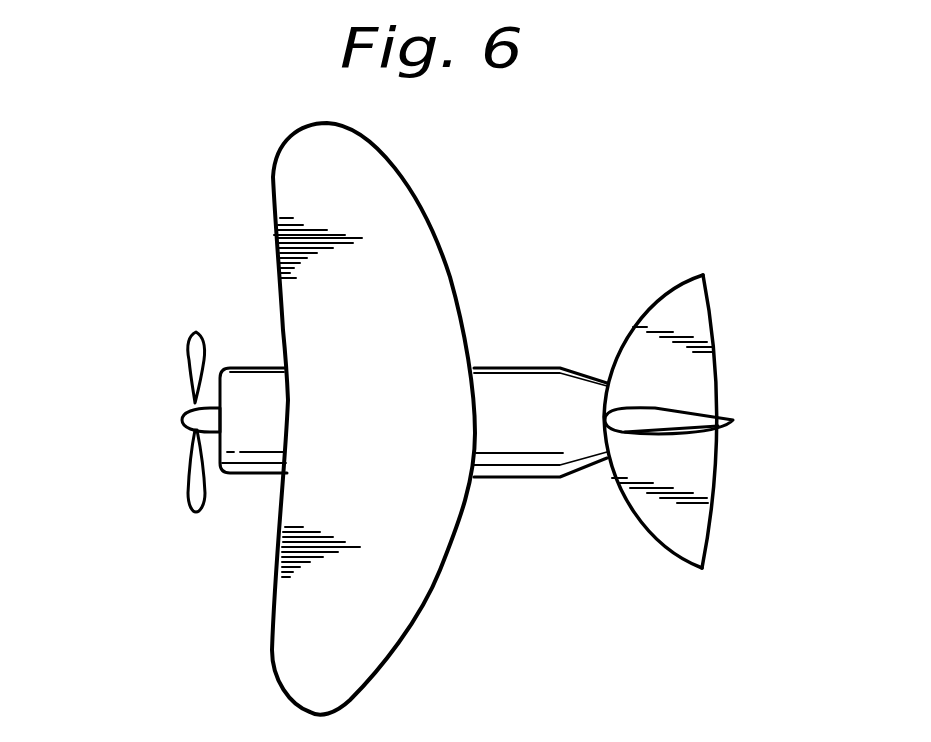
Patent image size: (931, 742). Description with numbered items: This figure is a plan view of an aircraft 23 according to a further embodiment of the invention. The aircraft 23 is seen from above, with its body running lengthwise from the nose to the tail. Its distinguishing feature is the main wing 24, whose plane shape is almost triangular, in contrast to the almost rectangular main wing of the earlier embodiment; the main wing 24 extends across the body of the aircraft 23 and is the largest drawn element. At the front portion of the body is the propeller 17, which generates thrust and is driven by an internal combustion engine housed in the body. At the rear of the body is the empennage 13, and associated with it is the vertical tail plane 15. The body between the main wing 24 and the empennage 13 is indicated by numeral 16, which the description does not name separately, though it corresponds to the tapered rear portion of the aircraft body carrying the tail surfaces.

The aircraft 23 is at (553, 242).
The main wing 24 is at (438, 543).
The fuselage 16 is at (531, 460).
The propeller 17 is at (195, 352).
The empennage 13 is at (647, 525).
The vertical tail plane 15 is at (678, 422).